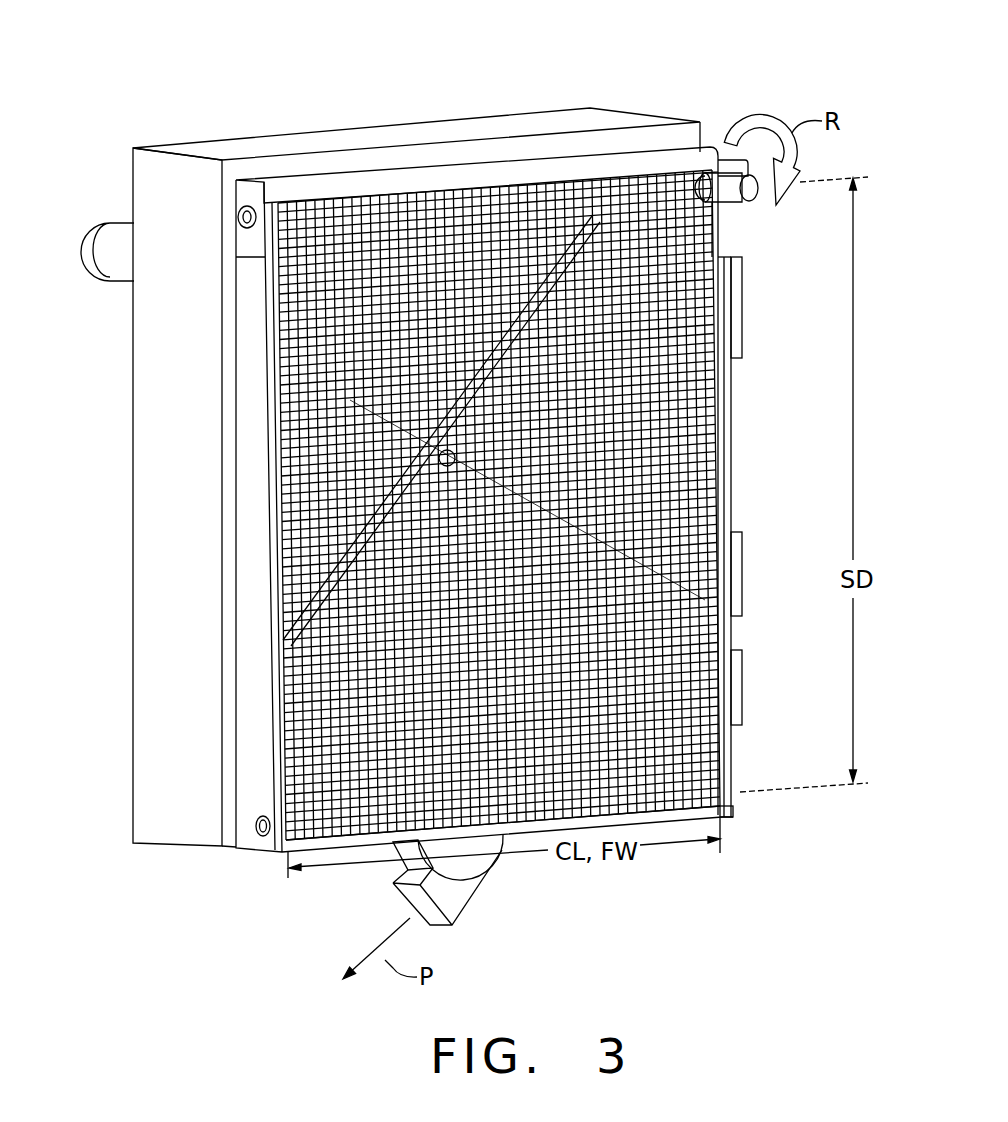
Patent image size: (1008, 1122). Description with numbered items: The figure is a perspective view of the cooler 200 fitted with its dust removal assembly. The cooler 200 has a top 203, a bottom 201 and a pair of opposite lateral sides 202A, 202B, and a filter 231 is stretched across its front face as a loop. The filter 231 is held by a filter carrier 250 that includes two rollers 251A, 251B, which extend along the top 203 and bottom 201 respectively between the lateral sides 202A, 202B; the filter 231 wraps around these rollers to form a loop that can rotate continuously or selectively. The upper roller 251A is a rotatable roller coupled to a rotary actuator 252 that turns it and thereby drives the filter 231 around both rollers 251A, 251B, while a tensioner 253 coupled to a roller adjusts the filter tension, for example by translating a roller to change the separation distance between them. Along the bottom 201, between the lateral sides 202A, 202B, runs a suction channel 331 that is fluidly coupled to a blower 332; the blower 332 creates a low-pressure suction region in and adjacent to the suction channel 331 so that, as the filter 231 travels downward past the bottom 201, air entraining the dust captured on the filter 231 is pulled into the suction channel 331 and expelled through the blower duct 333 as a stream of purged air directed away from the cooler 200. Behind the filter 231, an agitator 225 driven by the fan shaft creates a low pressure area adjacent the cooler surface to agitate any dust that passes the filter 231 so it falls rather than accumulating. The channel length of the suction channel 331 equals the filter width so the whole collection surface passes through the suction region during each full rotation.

The cooler 200 is at (634, 86).
The bottom 201 is at (370, 850).
The lateral side 202A is at (720, 426).
The lateral side 202B is at (223, 497).
The top 203 is at (327, 168).
The agitator 225 is at (300, 388).
The filter 231 is at (718, 513).
The filter carrier 250 is at (742, 213).
The roller 251A is at (678, 172).
The roller 251B is at (733, 818).
The rotary actuator 252 is at (748, 205).
The tensioner 253 is at (727, 240).
The suction channel 331 is at (664, 818).
The blower 332 is at (473, 865).
The blower duct 333 is at (453, 903).